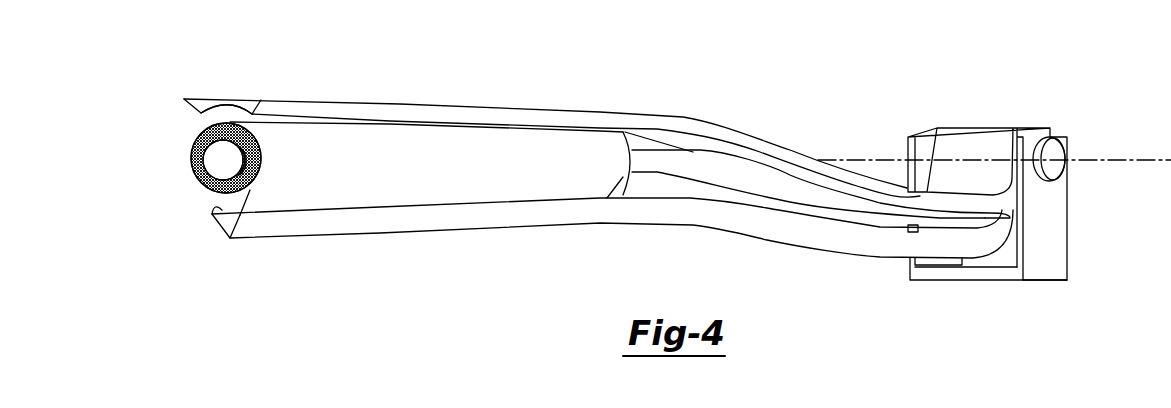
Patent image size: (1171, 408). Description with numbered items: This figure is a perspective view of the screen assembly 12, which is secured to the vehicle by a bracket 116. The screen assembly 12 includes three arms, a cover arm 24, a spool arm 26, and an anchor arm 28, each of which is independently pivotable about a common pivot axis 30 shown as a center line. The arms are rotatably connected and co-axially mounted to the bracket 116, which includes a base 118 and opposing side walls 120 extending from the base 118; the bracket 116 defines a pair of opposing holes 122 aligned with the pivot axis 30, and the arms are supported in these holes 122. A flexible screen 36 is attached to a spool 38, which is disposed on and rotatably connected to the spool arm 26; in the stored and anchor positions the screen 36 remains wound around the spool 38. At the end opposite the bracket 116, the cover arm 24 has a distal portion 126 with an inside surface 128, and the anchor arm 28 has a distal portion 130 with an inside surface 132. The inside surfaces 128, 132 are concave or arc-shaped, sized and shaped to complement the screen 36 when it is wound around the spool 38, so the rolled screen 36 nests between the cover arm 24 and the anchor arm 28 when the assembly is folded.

The screen assembly 12 is at (166, 65).
The cover arm 24 is at (334, 103).
The spool arm 26 is at (650, 165).
The anchor arm 28 is at (335, 231).
The pivot axis 30 is at (1128, 158).
The flexible screen 36 is at (475, 153).
The spool 38 is at (242, 165).
The bracket 116 is at (1030, 152).
The base 118 is at (977, 278).
The side walls 120 is at (908, 142).
The holes 122 is at (1057, 177).
The distal portion 126 is at (492, 103).
The inside surface 128 is at (212, 110).
The distal portion 130 is at (464, 239).
The inside surface 132 is at (213, 204).